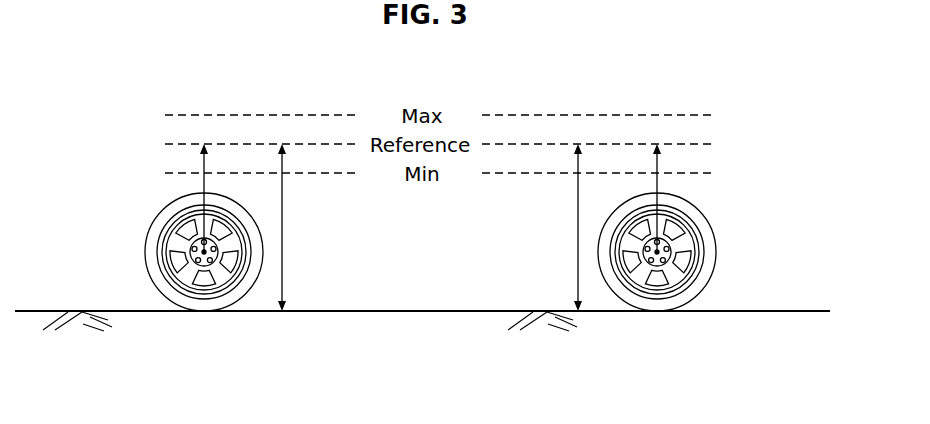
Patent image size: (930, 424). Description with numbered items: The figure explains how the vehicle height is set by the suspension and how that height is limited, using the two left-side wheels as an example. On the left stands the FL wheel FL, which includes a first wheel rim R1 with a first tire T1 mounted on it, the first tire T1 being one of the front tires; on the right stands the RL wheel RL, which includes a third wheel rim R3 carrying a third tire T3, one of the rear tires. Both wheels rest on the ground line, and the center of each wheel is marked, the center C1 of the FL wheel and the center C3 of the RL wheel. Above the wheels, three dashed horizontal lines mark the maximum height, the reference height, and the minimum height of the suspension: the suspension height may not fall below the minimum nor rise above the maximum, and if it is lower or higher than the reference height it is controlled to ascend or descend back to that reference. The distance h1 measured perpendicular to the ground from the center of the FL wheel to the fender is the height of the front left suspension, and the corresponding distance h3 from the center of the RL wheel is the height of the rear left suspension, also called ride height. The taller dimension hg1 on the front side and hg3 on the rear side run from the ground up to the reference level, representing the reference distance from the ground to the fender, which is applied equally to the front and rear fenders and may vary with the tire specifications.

The first tire T1 is at (211, 305).
The first wheel rim R1 is at (227, 283).
The front wheel center C1 is at (204, 252).
The distance from the center of the FL wheel to the fender h1 is at (204, 182).
The front reference height hg1 is at (303, 227).
The FL wheel FL is at (152, 316).
The third tire T3 is at (664, 305).
The third wheel rim R3 is at (680, 283).
The rear wheel center C3 is at (665, 249).
The distance from the center of the RL wheel to the fender h3 is at (657, 181).
The rear reference height hg3 is at (558, 227).
The RL wheel RL is at (605, 316).